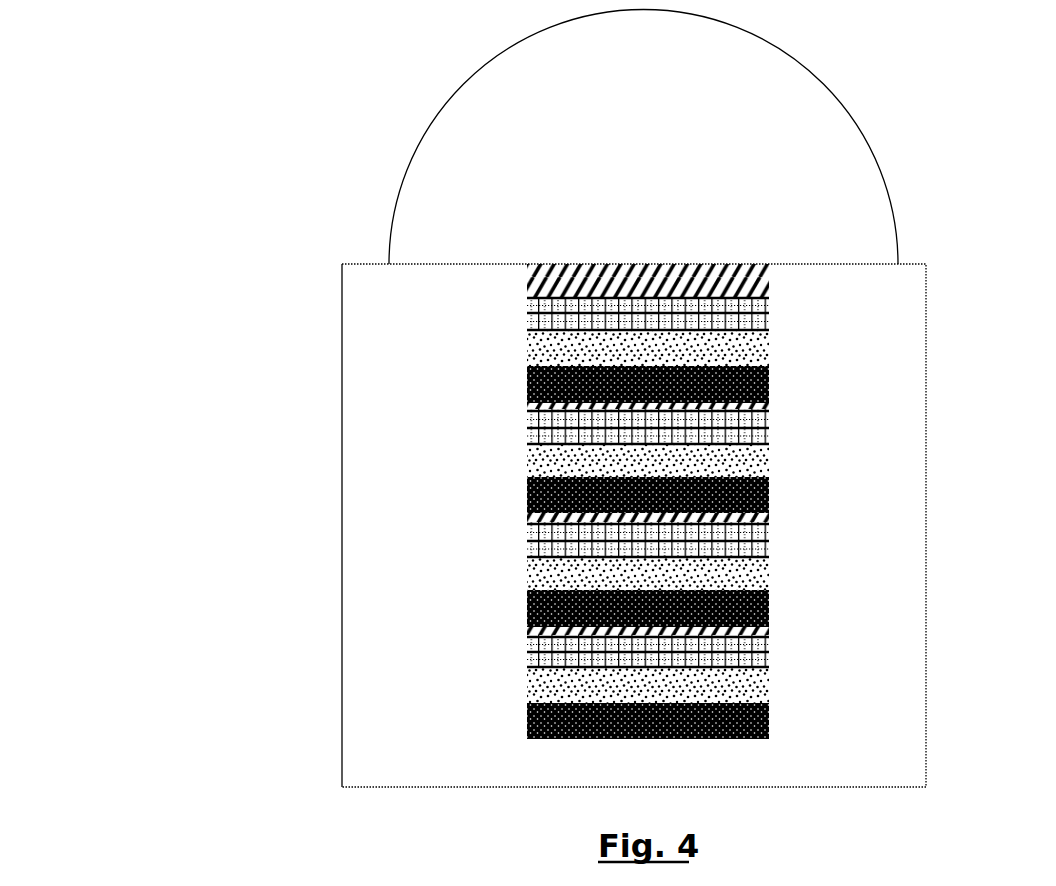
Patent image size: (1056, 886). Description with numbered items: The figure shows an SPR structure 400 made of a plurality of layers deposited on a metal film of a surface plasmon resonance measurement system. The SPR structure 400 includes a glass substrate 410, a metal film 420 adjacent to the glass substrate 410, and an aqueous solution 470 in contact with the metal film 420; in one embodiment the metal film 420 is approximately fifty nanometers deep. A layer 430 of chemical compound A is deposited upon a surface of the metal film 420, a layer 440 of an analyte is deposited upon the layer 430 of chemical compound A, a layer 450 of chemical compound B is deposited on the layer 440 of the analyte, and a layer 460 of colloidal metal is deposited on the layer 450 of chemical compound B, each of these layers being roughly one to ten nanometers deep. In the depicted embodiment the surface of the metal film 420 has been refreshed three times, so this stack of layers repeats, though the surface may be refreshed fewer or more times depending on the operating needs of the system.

The SPR structure 400 is at (308, 125).
The glass substrate 410 is at (856, 120).
The metal film 420 is at (527, 285).
The layer of chemical compound A 430 is at (770, 313).
The layer of analyte 440 is at (527, 349).
The layer of chemical compound B 450 is at (770, 383).
The layer of colloidal metal 460 is at (527, 407).
The aqueous solution 470 is at (900, 502).